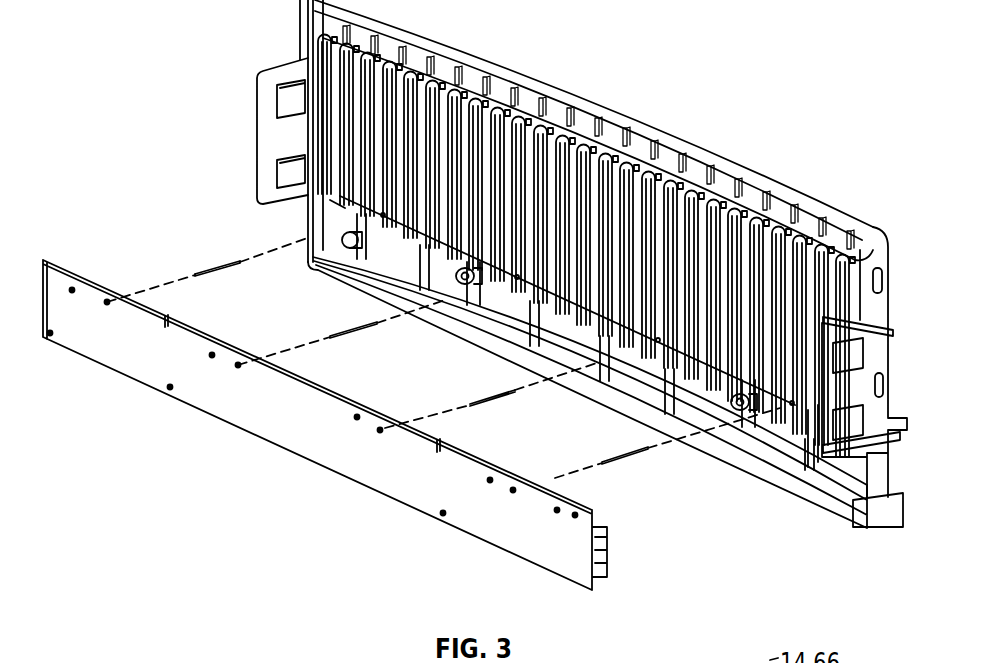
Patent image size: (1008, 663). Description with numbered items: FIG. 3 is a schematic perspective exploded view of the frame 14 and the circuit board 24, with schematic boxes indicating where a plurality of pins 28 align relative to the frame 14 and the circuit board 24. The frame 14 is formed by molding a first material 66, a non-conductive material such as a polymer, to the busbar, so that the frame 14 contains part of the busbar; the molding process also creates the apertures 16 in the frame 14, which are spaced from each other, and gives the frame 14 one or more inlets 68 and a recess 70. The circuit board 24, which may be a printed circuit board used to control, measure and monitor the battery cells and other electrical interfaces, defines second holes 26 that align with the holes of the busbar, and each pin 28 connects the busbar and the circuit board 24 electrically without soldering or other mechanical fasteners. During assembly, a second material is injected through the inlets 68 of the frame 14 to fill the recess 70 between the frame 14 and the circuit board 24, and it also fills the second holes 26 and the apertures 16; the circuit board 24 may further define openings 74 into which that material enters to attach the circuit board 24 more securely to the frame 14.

The frame 14 is at (582, 264).
The first material 66 is at (630, 115).
The aperture 16 is at (790, 403).
The recess 70 is at (333, 204).
The inlet 68 is at (740, 403).
The pin 28 is at (628, 456).
The circuit board 24 is at (515, 545).
The second hole 26 is at (575, 515).
The opening 74 is at (443, 513).